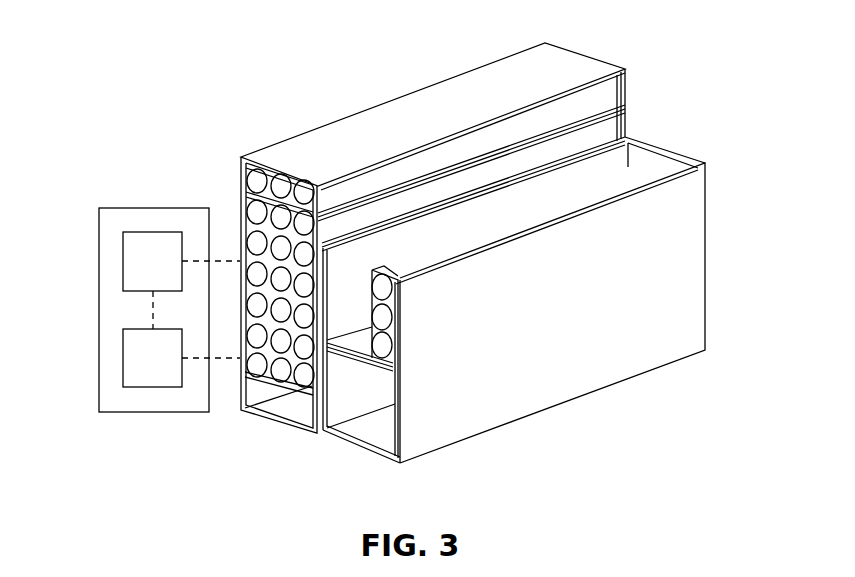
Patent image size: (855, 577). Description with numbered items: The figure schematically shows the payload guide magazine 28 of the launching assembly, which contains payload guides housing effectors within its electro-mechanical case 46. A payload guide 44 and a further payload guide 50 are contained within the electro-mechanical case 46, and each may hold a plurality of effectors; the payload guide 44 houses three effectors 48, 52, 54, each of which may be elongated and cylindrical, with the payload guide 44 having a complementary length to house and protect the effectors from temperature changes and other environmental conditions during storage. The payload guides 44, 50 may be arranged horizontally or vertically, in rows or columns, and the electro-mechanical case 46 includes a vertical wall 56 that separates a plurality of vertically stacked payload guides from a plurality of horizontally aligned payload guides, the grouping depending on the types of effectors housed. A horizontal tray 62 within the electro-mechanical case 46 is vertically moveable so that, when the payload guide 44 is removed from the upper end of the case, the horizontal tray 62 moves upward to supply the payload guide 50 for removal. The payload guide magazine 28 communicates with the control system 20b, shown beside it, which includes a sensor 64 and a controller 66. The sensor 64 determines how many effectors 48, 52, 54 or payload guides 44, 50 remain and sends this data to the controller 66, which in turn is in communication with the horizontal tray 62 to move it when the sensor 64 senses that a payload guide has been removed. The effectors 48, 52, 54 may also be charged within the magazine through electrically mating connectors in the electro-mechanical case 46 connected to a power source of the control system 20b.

The payload guide magazine 28 is at (462, 100).
The electro-mechanical case 46 is at (668, 252).
The vertical wall 56 is at (320, 372).
The horizontal tray 62 is at (235, 281).
The payload guide 44 is at (248, 168).
The payload guide 50 is at (247, 205).
The effector 48 is at (258, 180).
The effector 52 is at (282, 187).
The effector 54 is at (305, 193).
The control system 20b is at (139, 349).
The sensor 64 is at (146, 262).
The controller 66 is at (146, 357).